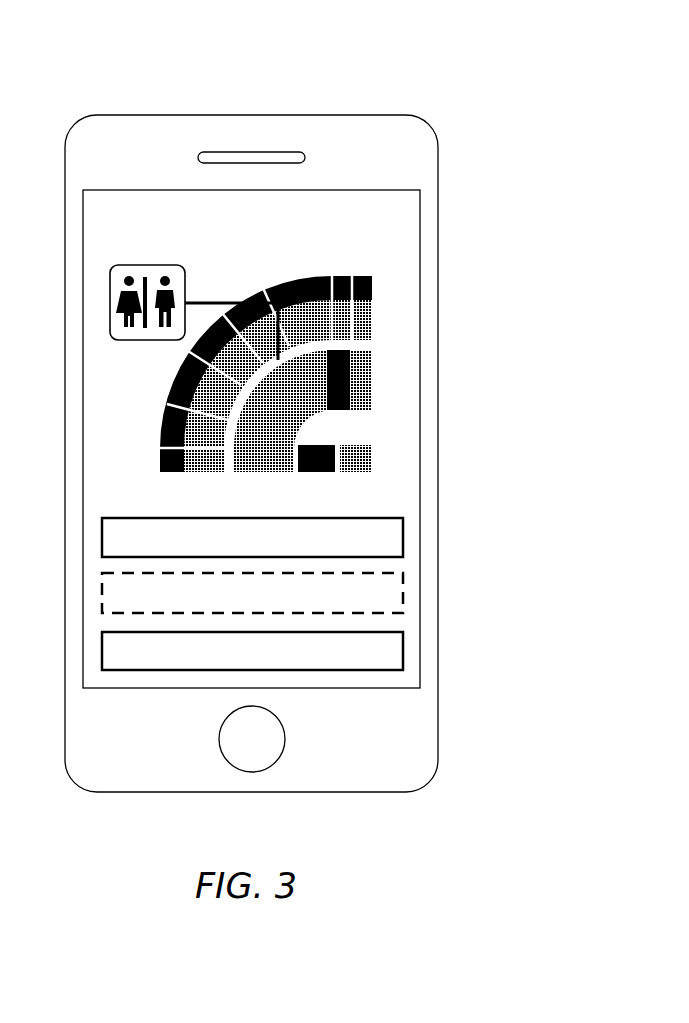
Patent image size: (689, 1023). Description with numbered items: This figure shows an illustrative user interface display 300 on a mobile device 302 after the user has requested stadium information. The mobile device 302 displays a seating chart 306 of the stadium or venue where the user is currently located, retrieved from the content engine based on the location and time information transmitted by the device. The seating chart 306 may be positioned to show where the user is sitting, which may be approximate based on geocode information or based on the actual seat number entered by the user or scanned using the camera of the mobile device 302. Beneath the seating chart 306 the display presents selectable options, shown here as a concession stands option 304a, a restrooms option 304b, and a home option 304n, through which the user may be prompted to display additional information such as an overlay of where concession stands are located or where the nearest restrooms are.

The user interface display 300 is at (286, 70).
The mobile device 302 is at (438, 209).
The concession stands button 304a is at (403, 535).
The restrooms button 304b is at (403, 592).
The home button 304n is at (403, 648).
The seating chart 306 is at (373, 378).